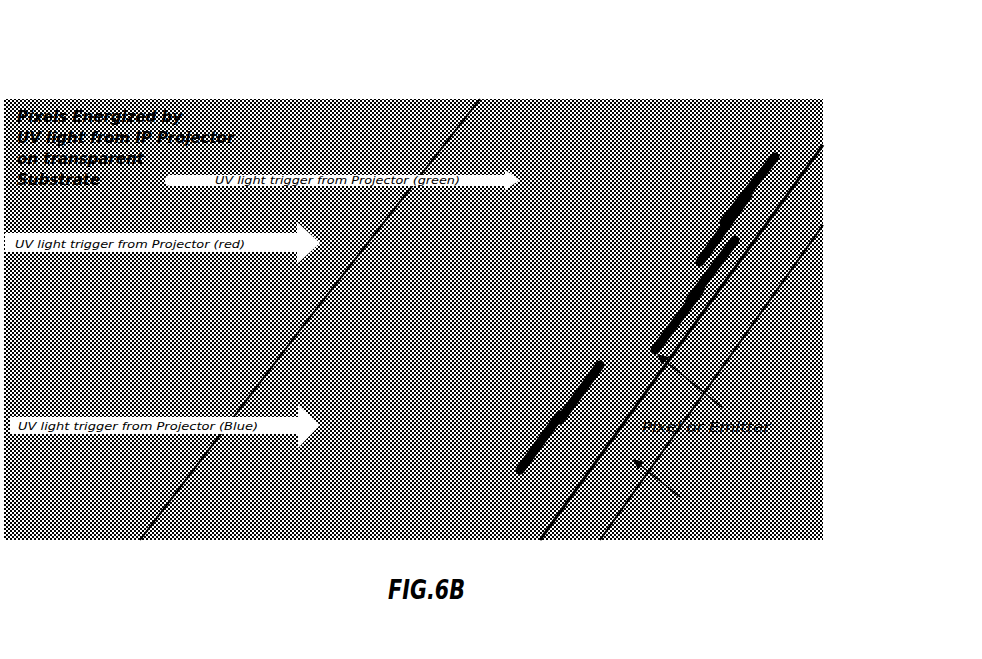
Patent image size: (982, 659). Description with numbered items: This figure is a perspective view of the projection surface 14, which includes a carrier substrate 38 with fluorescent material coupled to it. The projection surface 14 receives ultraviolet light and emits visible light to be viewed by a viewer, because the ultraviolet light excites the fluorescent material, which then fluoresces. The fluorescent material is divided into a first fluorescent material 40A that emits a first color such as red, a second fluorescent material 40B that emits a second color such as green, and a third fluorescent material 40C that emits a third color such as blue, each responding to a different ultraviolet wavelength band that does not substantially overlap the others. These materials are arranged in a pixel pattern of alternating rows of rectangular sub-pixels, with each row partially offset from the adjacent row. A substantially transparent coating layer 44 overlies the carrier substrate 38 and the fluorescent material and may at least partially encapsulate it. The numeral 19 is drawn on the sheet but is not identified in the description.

The transparent display assembly 19 is at (784, 70).
The third fluorescent material 40C is at (757, 205).
The projection surface 14 is at (818, 277).
The first fluorescent material 40A is at (703, 275).
The second fluorescent material 40B is at (552, 410).
The coating layer 44 is at (280, 331).
The carrier substrate 38 is at (711, 382).